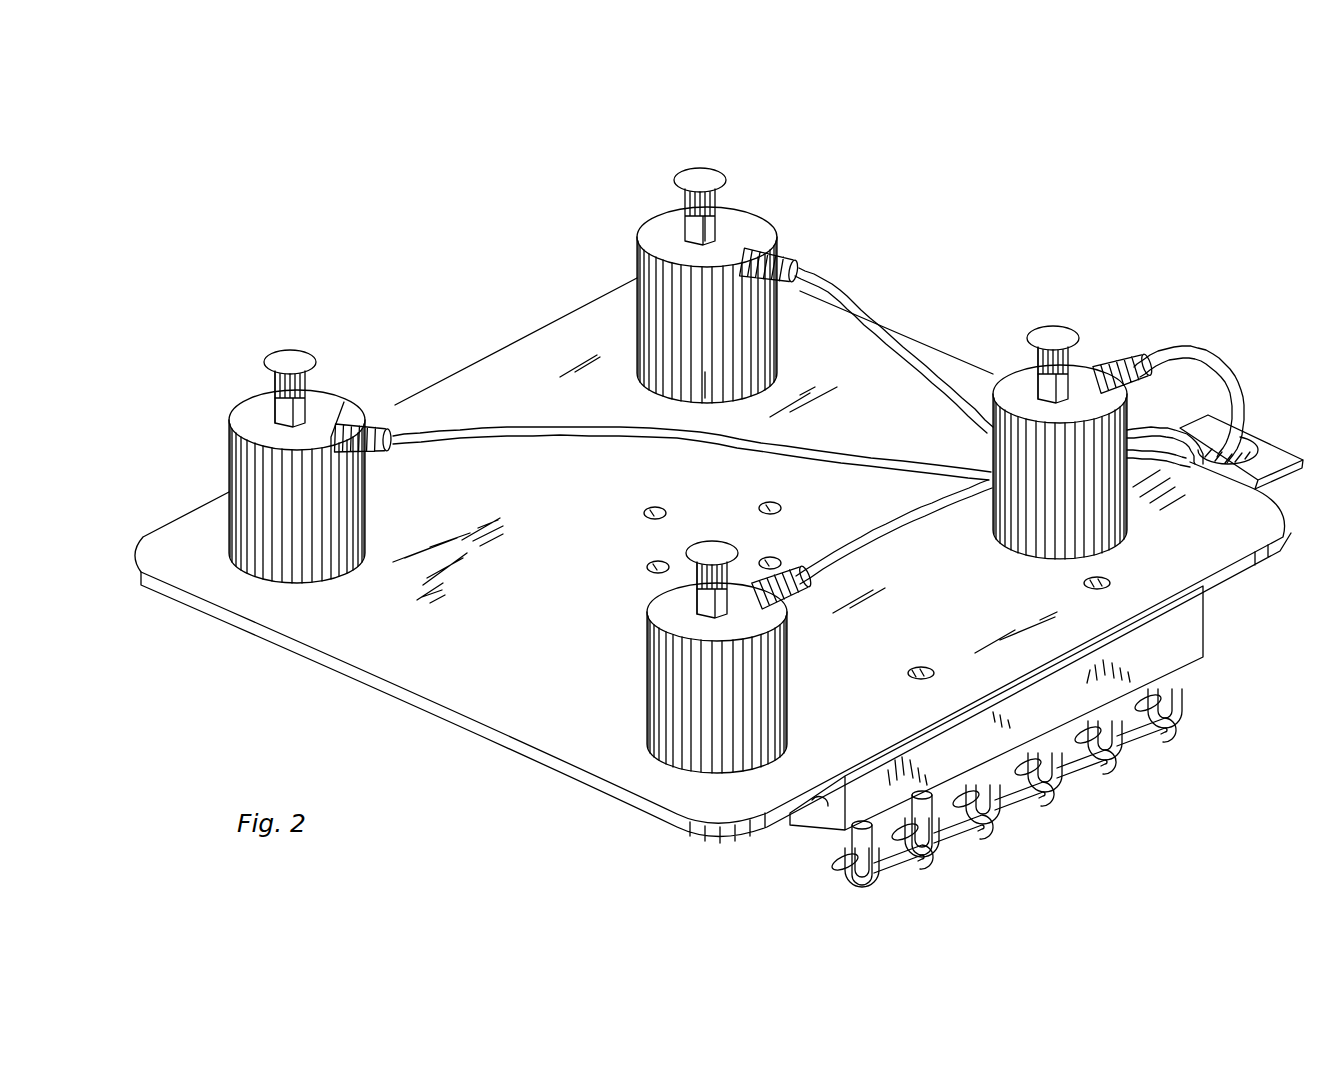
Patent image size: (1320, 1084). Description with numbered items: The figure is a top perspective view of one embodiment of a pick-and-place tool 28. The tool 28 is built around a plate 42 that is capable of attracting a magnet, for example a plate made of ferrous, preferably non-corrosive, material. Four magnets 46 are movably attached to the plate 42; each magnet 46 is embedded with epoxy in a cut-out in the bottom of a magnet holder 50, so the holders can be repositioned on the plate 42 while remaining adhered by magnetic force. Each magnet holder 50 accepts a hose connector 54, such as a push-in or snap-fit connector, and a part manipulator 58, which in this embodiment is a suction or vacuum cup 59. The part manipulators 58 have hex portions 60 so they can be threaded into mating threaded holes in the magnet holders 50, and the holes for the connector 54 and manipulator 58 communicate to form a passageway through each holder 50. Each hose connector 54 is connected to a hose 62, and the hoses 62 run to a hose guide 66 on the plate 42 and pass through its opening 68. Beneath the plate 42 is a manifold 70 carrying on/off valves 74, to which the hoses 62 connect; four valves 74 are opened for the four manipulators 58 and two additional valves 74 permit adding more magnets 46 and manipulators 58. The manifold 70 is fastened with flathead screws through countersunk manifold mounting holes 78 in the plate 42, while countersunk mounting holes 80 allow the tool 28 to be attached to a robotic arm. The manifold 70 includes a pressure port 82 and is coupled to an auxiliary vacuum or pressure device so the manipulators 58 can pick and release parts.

The pick-and-place tool 28 is at (1057, 155).
The plate 42 is at (455, 718).
The magnet 46 is at (679, 443).
The magnet holder 50 is at (640, 263).
The hose connector 54 is at (778, 257).
The part manipulator 58 is at (705, 170).
The suction or vacuum cup 59 is at (685, 172).
The hex portion 60 is at (673, 228).
The hose 62 is at (850, 302).
The hose guide 66 is at (1253, 432).
The opening 68 is at (1252, 453).
The manifold 70 is at (1183, 663).
The on/off valve 74 is at (1093, 790).
The manifold mounting hole 78 is at (1087, 583).
The mounting hole 80 is at (765, 558).
The pressure port 82 is at (790, 808).